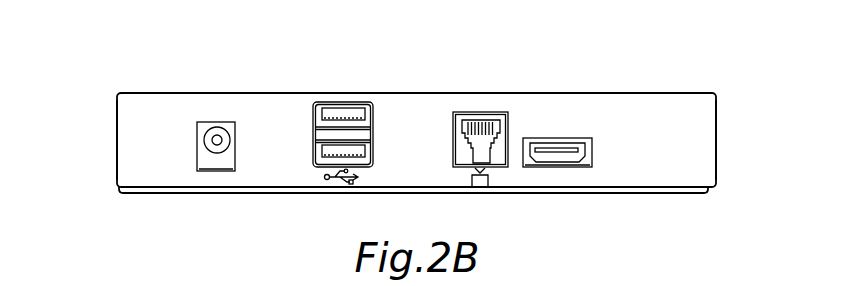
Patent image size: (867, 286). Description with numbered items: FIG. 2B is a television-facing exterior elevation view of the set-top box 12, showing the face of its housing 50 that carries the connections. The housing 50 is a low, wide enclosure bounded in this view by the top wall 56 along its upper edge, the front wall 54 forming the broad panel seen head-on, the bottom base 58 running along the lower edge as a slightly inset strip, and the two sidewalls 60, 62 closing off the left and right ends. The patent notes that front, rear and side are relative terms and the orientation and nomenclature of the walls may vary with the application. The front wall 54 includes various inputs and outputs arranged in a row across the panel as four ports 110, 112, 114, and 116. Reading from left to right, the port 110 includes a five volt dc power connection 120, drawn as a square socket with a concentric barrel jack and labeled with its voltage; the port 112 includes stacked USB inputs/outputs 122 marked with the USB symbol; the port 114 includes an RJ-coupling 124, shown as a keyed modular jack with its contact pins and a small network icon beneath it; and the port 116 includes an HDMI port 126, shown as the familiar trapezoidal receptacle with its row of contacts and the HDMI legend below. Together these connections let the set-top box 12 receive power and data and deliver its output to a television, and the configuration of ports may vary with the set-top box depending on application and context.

The set-top box 12 is at (140, 80).
The housing 50 is at (690, 80).
The front wall 54 is at (147, 181).
The top wall 56 is at (183, 93).
The bottom base 58 is at (270, 195).
The sidewall 60 is at (117, 143).
The sidewall 62 is at (717, 138).
The port 110 is at (230, 125).
The port 112 is at (342, 102).
The port 114 is at (483, 112).
The port 116 is at (557, 137).
The 5V dc power connection 120 is at (215, 169).
The USB inputs/outputs 122 is at (323, 164).
The RJ-coupling 124 is at (497, 160).
The HDMI port 126 is at (588, 168).